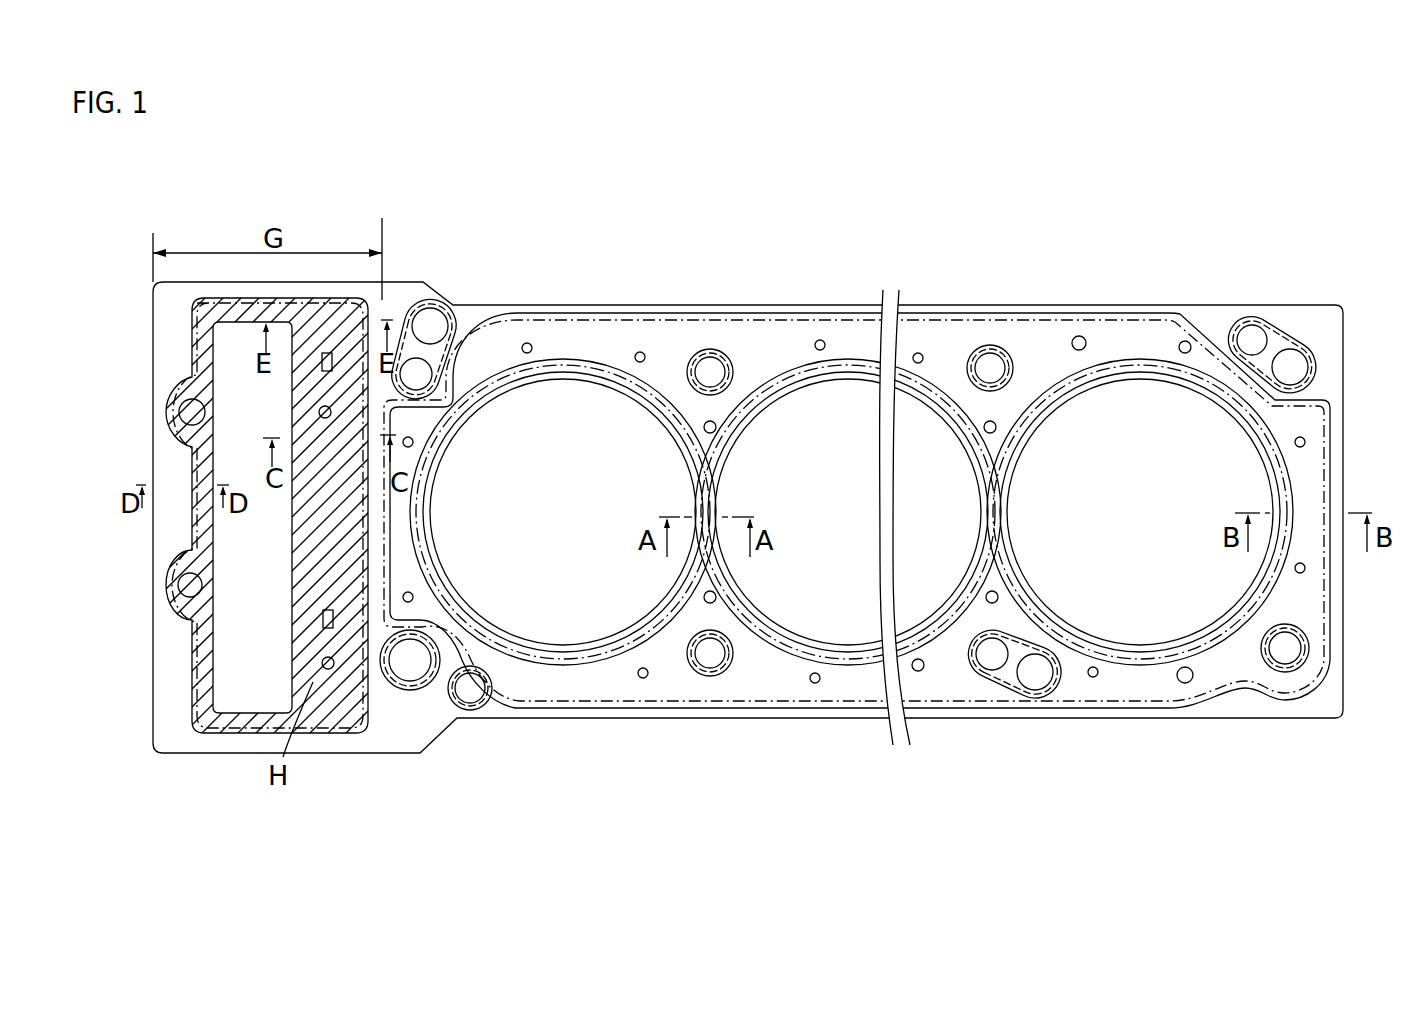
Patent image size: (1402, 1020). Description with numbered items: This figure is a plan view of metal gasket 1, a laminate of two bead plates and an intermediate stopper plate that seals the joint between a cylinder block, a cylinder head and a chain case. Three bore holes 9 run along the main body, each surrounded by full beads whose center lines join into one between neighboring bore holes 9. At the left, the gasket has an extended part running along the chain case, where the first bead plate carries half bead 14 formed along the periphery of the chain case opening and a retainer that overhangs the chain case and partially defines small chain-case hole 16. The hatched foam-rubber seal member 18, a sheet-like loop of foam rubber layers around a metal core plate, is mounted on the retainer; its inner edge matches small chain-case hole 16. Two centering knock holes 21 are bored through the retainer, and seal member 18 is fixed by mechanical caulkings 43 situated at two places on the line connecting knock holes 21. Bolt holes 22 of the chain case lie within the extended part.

The metal gasket 1 is at (985, 298).
The bore hole 9 is at (574, 539).
The half bead 14 is at (192, 533).
The small chain-case hole 16 is at (288, 697).
The foam-rubber seal member 18 is at (337, 707).
The centering knock hole 21 is at (319, 416).
The bolt hole 22 is at (183, 412).
The mechanical caulking 43 is at (320, 364).